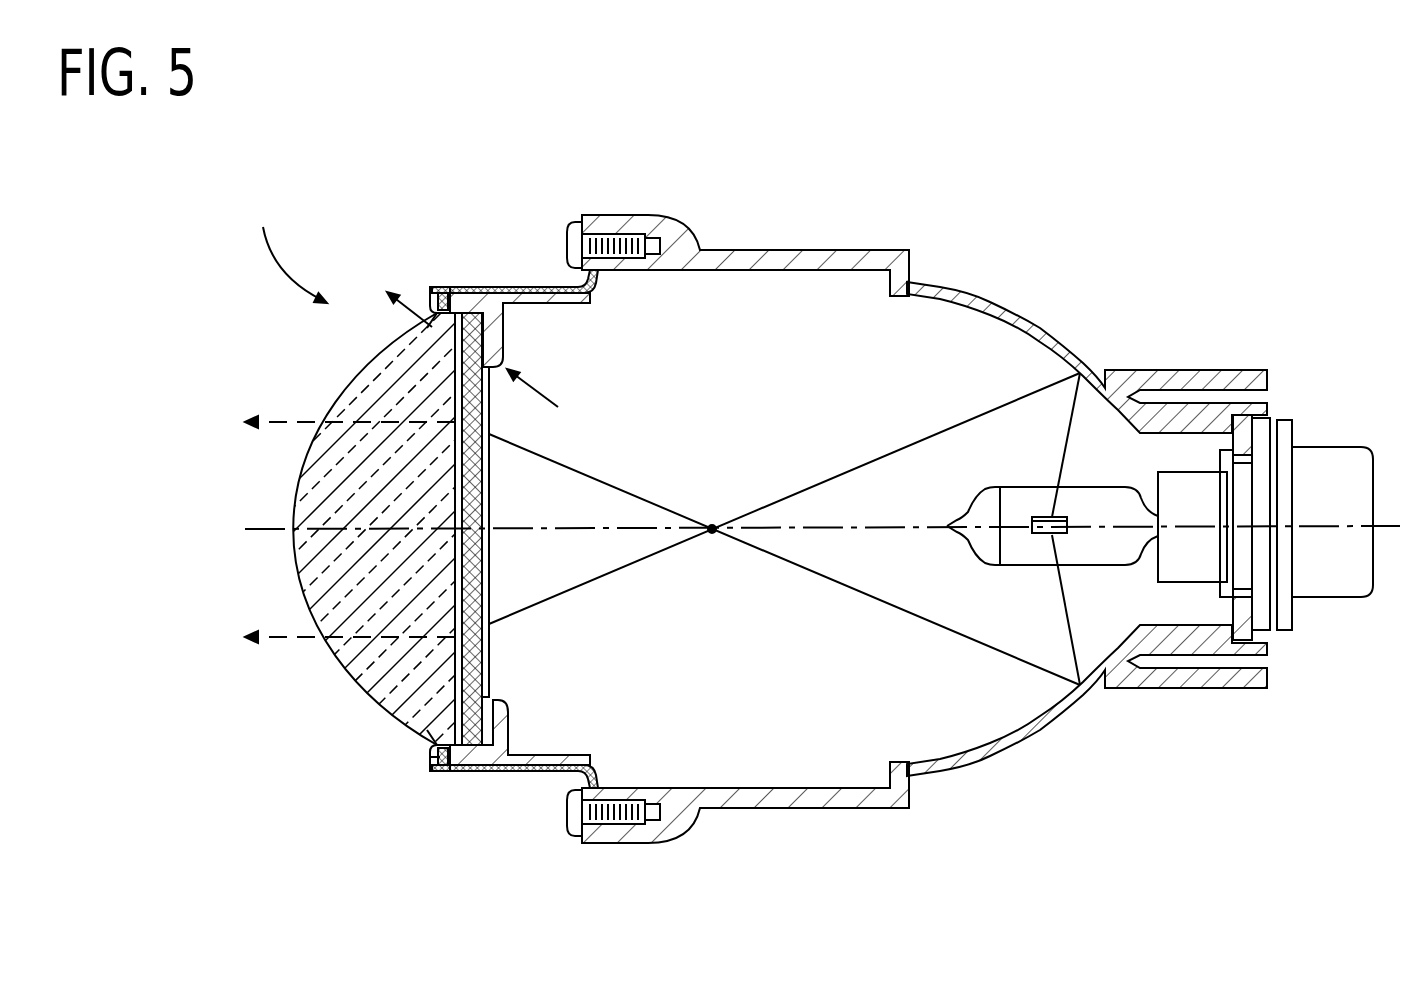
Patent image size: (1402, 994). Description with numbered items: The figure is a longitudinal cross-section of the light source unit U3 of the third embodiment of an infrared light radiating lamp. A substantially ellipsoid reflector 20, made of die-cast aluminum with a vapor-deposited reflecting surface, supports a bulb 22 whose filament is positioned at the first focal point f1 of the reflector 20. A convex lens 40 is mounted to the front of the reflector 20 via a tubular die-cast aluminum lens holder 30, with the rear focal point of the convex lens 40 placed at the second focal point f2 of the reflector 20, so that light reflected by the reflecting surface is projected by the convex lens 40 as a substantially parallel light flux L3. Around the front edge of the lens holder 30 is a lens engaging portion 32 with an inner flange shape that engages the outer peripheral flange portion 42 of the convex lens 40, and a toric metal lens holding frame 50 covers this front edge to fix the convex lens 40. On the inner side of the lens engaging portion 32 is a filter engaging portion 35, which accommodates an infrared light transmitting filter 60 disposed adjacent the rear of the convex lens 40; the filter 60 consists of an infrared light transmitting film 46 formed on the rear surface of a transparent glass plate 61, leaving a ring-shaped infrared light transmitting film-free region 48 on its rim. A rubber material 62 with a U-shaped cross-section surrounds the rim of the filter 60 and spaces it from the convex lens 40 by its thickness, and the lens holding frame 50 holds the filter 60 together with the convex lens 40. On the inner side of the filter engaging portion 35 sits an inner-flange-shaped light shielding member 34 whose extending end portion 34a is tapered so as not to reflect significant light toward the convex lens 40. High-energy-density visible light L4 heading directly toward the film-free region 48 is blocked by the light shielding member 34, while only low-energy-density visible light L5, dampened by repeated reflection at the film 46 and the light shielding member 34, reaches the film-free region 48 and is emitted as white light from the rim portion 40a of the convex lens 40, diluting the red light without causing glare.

The reflector 20 is at (1012, 300).
The bulb 22 is at (1100, 487).
The lens holder 30 is at (803, 250).
The lens engaging portion 32 is at (452, 287).
The light shielding member 34 is at (503, 350).
The extending end portion 34a is at (505, 700).
The filter engaging portion 35 is at (497, 287).
The convex lens 40 is at (317, 487).
The rim portion 40a is at (413, 327).
The outer peripheral flange portion 42 is at (440, 757).
The infrared light transmitting film 46 is at (489, 494).
The infrared light transmitting film-free region 48 is at (557, 287).
The lens holding frame 50 is at (443, 287).
The infrared light transmitting filter 60 is at (458, 680).
The glass plate 61 is at (490, 415).
The rubber material 62 is at (480, 768).
The light source unit U3 is at (279, 241).
The parallel light flux L3 is at (319, 526).
The light source light L4 is at (563, 401).
The visible light L5 is at (381, 289).
The first focal point f1 is at (1046, 529).
The second focal point f2 is at (715, 555).